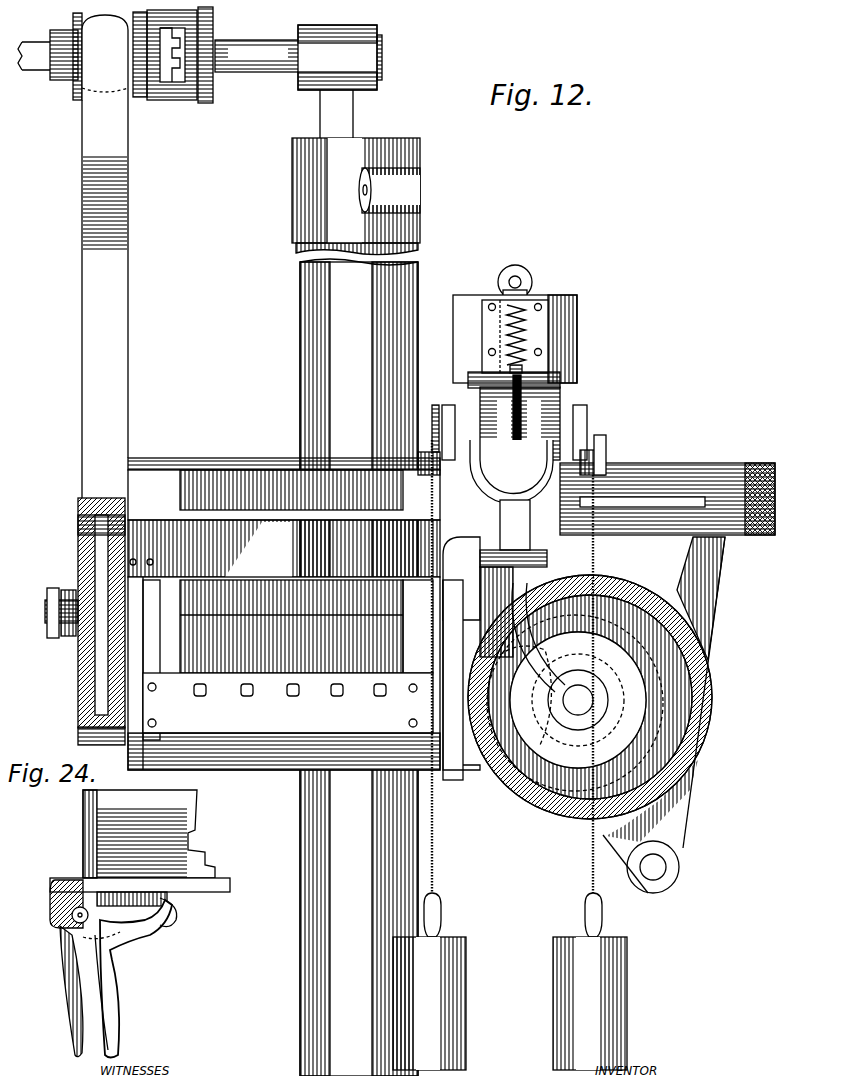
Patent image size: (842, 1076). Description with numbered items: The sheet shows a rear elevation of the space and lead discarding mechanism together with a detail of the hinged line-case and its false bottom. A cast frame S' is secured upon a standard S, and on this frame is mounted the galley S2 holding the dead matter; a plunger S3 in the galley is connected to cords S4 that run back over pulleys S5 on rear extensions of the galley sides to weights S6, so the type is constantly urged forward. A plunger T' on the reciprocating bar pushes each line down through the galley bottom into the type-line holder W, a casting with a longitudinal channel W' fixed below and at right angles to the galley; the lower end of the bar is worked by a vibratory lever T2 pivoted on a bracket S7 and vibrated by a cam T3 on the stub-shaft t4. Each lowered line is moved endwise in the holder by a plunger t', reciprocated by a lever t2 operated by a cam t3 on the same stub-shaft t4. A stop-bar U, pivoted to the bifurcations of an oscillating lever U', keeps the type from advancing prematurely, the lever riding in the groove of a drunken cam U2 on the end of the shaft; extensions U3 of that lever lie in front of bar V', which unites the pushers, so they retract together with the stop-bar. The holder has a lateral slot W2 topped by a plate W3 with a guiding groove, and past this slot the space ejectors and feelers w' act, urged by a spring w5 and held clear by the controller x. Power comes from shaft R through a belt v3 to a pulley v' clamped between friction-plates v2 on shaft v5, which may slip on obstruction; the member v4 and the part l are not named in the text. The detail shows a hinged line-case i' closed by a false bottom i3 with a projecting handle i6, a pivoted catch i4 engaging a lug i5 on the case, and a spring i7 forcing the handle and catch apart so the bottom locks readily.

In FIG. 12, the shaft R is at (200, 72).
In FIG. 12, the standard S is at (356, 607).
In FIG. 12, the cast frame S' is at (293, 686).
In FIG. 12, the galley S2 is at (449, 406).
In FIG. 12, the plunger S3 is at (478, 540).
In FIG. 12, the cords S4 is at (607, 548).
In FIG. 12, the pulleys S5 is at (608, 440).
In FIG. 12, the weights S6 is at (510, 755).
In FIG. 12, the bracket S7 is at (668, 840).
In FIG. 12, the plunger T' is at (528, 282).
In FIG. 12, the vibratory lever T2 is at (628, 606).
In FIG. 12, the cam T3 is at (700, 765).
In FIG. 12, the plunger t' is at (676, 499).
In FIG. 12, the lever t2 is at (710, 612).
In FIG. 12, the cam t3 is at (706, 737).
In FIG. 12, the stub-shaft t4 is at (575, 703).
In FIG. 12, the stop-bar U is at (562, 423).
In FIG. 12, the oscillating lever U' is at (511, 476).
In FIG. 12, the drunken cam U2 is at (525, 698).
In FIG. 12, the extensions U3 is at (470, 372).
In FIG. 12, the bar V' is at (555, 412).
In FIG. 12, the type-line holder W is at (399, 517).
In FIG. 12, the longitudinal channel W' is at (769, 545).
In FIG. 12, the lateral slot W2 is at (338, 468).
In FIG. 12, the plate W3 is at (232, 466).
In FIG. 12, the space ejectors and feelers w' is at (281, 453).
In FIG. 12, the spring w5 is at (282, 701).
In FIG. 12, the controller x is at (390, 655).
In FIG. 12, the bracket l is at (706, 692).
In FIG. 12, the pulley v' is at (87, 698).
In FIG. 12, the friction-plates v2 is at (91, 613).
In FIG. 12, the belt v3 is at (105, 299).
In FIG. 12, the screws v4 is at (130, 548).
In FIG. 12, the shaft v5 is at (77, 613).
In FIG. 24, the hinged line-case i' is at (143, 848).
In FIG. 24, the false bottom i3 is at (83, 845).
In FIG. 24, the catch i4 is at (178, 921).
In FIG. 24, the lug i5 is at (152, 912).
In FIG. 24, the handle i6 is at (80, 980).
In FIG. 24, the spring i7 is at (112, 1003).